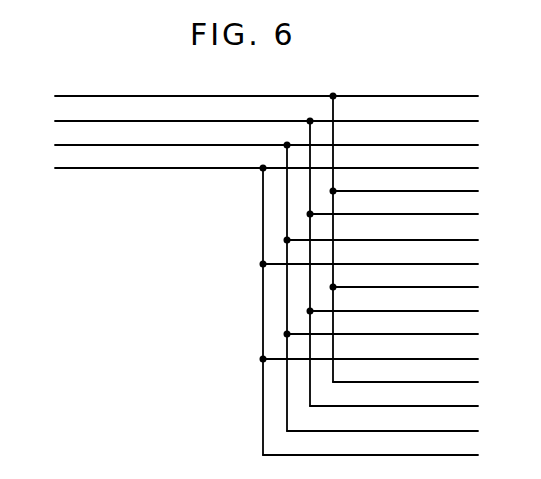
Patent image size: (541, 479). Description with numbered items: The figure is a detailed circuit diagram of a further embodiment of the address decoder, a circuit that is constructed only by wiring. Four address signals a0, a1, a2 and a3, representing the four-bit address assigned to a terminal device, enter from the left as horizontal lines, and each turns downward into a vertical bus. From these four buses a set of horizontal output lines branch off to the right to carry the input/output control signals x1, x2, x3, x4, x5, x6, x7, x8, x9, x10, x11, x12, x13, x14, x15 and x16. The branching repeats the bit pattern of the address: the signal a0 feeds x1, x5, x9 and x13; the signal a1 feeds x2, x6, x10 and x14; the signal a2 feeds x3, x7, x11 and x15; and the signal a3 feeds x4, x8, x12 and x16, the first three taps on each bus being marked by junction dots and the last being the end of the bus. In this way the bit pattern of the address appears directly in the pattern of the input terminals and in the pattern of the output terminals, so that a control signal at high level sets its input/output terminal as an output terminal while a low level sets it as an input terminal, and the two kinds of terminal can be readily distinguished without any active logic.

The logical address signal a0 is at (179, 233).
The logical address signal a1 is at (168, 258).
The logical address signal a2 is at (156, 282).
The logical address signal a3 is at (144, 306).
The input/output control signal x1 is at (416, 98).
The input/output control signal x2 is at (405, 123).
The input/output control signal x3 is at (393, 147).
The input/output control signal x4 is at (381, 170).
The input/output control signal x5 is at (416, 193).
The input/output control signal x6 is at (405, 216).
The input/output control signal x7 is at (393, 242).
The input/output control signal x8 is at (381, 266).
The input/output control signal x9 is at (416, 289).
The input/output control signal x10 is at (409, 313).
The input/output control signal x11 is at (397, 336).
The input/output control signal x12 is at (385, 361).
The input/output control signal x13 is at (422, 384).
The input/output control signal x14 is at (410, 408).
The input/output control signal x15 is at (399, 433).
The input/output control signal x16 is at (387, 457).